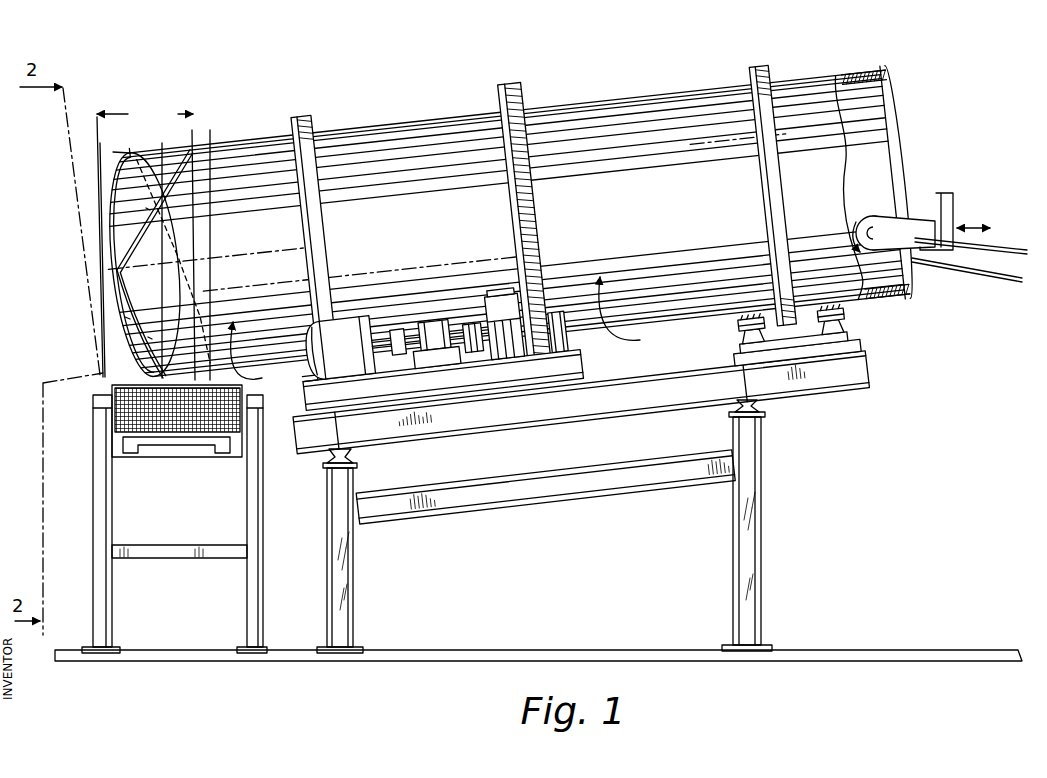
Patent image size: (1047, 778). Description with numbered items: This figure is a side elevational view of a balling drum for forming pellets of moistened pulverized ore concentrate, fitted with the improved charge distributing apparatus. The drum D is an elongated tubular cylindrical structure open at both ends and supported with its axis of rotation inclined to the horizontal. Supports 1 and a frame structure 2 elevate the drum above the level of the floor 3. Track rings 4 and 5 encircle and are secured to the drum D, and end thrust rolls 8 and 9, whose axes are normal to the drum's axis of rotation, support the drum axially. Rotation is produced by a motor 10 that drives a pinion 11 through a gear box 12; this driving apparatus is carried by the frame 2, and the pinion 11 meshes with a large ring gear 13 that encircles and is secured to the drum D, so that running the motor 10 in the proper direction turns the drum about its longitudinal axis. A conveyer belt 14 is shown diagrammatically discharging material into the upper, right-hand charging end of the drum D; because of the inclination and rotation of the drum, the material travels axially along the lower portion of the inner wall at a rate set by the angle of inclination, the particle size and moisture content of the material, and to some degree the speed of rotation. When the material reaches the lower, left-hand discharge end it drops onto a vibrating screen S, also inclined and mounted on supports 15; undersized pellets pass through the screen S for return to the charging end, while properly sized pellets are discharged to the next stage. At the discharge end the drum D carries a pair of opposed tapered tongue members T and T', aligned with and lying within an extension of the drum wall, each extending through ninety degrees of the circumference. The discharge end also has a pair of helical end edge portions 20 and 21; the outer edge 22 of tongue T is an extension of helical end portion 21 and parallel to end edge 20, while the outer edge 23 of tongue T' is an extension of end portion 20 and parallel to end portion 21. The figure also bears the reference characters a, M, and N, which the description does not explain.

The supports 1 is at (340, 587).
The frame structure 2 is at (608, 400).
The floor 3 is at (882, 652).
The track ring 4 is at (310, 223).
The track ring 5 is at (772, 167).
The end thrust roll 8 is at (750, 324).
The end thrust roll 9 is at (830, 318).
The motor 10 is at (340, 337).
The pinion 11 is at (541, 308).
The gear box 12 is at (500, 303).
The ring gear 13 is at (523, 200).
The conveyer belt 14 is at (917, 223).
The supports 15 is at (103, 589).
The helical end edge portion 20 is at (178, 304).
The helical end edge portion 21 is at (164, 229).
The outer edge of tongue T 22 is at (117, 187).
The outer edge of tongue T' 23 is at (127, 318).
The vibrating screen S is at (190, 418).
The tapered tongue member T is at (96, 220).
The tapered tongue member T' is at (108, 353).
The drum D is at (234, 148).
The direction of arm movement a is at (1003, 234).
The material flow indicator M is at (266, 332).
The material flow indicator N is at (638, 305).